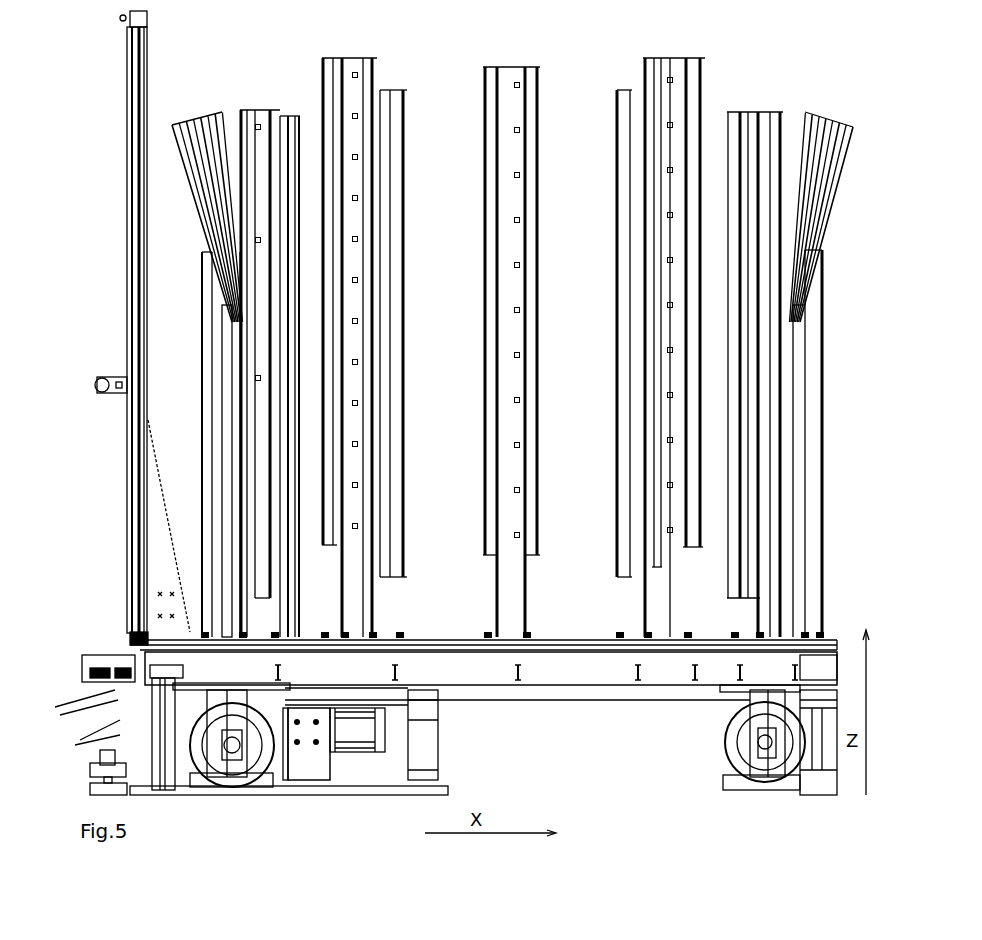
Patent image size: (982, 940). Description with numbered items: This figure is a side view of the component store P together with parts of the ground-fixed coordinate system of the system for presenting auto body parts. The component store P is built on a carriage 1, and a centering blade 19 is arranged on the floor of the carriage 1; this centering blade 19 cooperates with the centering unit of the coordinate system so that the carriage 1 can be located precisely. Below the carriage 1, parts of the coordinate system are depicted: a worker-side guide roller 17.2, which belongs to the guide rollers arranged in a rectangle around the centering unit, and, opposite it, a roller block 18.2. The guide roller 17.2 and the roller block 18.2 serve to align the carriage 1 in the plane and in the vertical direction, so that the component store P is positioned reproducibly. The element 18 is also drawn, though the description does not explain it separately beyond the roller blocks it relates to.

The carriage 1 is at (712, 670).
The centering blade 19 is at (597, 693).
The drive motor 18 is at (306, 762).
The worker-side guide roller 17.2 is at (168, 790).
The roller block 18.2 is at (812, 788).
The component store P is at (823, 443).